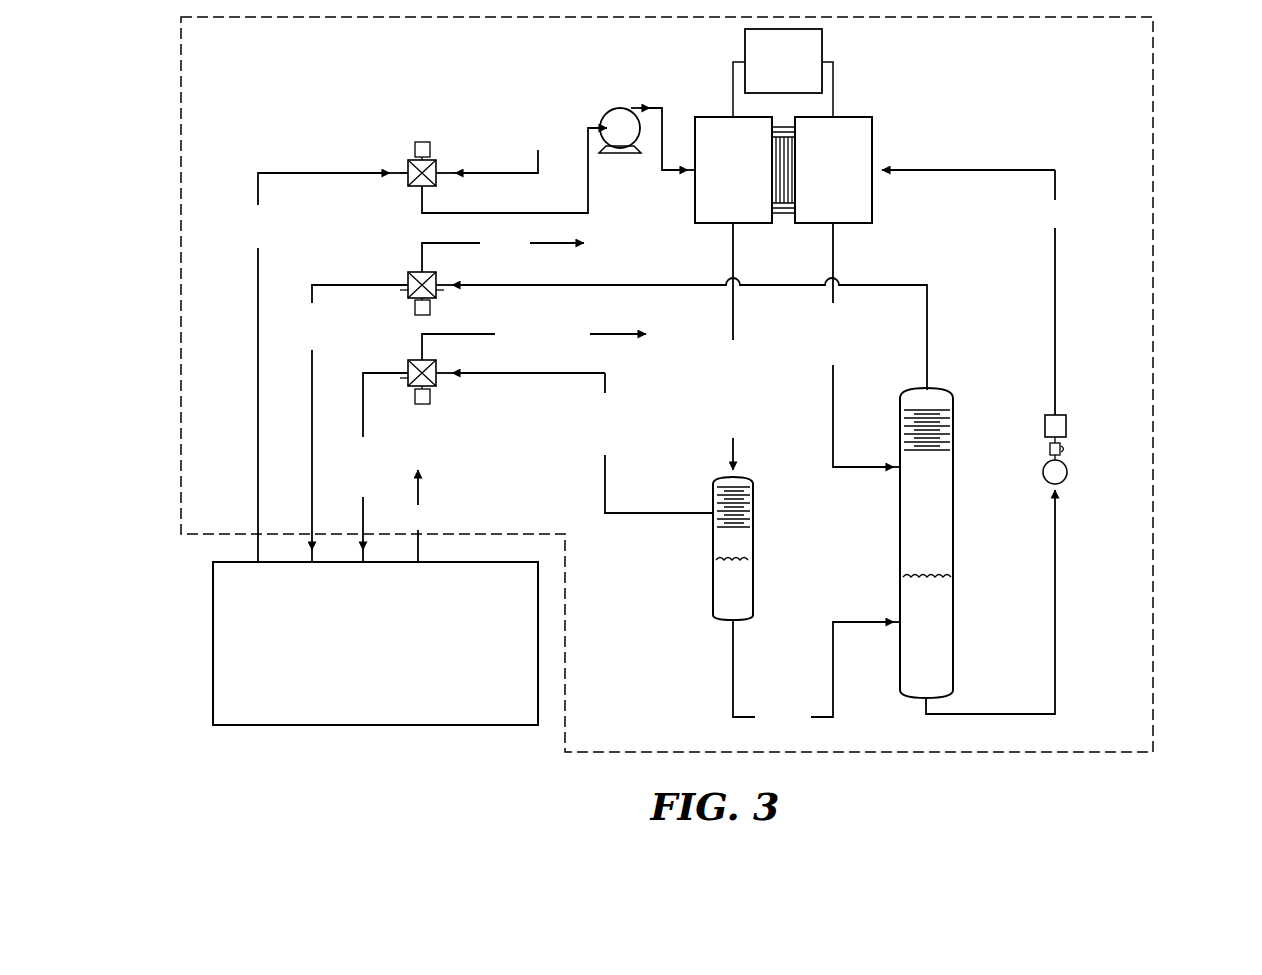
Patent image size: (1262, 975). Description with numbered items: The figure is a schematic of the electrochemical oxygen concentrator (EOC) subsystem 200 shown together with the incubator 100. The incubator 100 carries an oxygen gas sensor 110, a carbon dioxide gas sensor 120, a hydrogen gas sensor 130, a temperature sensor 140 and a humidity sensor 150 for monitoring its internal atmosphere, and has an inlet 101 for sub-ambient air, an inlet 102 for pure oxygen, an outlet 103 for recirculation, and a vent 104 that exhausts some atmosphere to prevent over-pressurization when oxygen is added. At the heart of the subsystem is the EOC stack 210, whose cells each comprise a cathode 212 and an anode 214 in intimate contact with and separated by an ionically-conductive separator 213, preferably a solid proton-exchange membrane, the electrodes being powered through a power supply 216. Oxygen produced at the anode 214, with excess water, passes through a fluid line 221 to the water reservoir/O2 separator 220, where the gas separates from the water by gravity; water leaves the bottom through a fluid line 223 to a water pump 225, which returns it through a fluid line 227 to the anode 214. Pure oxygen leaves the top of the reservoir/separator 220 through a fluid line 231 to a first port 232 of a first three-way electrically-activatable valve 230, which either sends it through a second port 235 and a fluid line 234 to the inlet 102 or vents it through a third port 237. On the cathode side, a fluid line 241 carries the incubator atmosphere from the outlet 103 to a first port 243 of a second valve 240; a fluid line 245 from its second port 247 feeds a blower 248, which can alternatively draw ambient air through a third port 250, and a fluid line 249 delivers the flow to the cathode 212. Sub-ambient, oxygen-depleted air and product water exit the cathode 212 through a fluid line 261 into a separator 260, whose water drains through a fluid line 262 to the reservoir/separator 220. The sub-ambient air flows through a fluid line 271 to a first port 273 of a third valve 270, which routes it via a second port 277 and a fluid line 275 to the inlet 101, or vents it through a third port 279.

The EOC subsystem 200 is at (1200, 150).
The incubator 100 is at (403, 630).
The inlet 101 is at (364, 542).
The inlet 102 is at (312, 469).
The outlet 103 is at (258, 418).
The vent 104 is at (418, 529).
The oxygen gas sensor 110 is at (224, 609).
The carbon dioxide gas sensor 120 is at (225, 633).
The hydrogen gas sensor 130 is at (225, 658).
The temperature sensor 140 is at (224, 682).
The humidity sensor 150 is at (225, 707).
The EOC stack 210 is at (783, 189).
The cathode 212 is at (719, 192).
The ionically-conductive separator 213 is at (781, 133).
The anode 214 is at (819, 192).
The power supply 216 is at (769, 86).
The water reservoir/O2 separator 220 is at (900, 560).
The fluid line 221 is at (833, 402).
The fluid line 223 is at (993, 713).
The water pump 225 is at (1050, 449).
The fluid line 227 is at (1055, 318).
The first 3-way electrically-activatable valve 230 is at (404, 271).
The fluid line 231 is at (588, 284).
The first port 232 is at (437, 297).
The fluid line 234 is at (352, 284).
The second port 235 is at (405, 297).
The third port 237 is at (424, 267).
The second 3-way electrically-activatable valve 240 is at (404, 185).
The fluid line 241 is at (323, 172).
The first port 243 is at (408, 167).
The fluid line 245 is at (552, 212).
The second port 247 is at (431, 189).
The blower 248 is at (621, 156).
The fluid line 249 is at (665, 128).
The third port 250 is at (436, 167).
The separator 260 is at (713, 595).
The fluid line 261 is at (733, 327).
The fluid line 262 is at (833, 668).
The third 3-way electrically-activatable valve 270 is at (404, 360).
The fluid line 271 is at (605, 470).
The first port 273 is at (437, 386).
The fluid line 275 is at (362, 387).
The second port 277 is at (407, 386).
The third port 279 is at (424, 356).